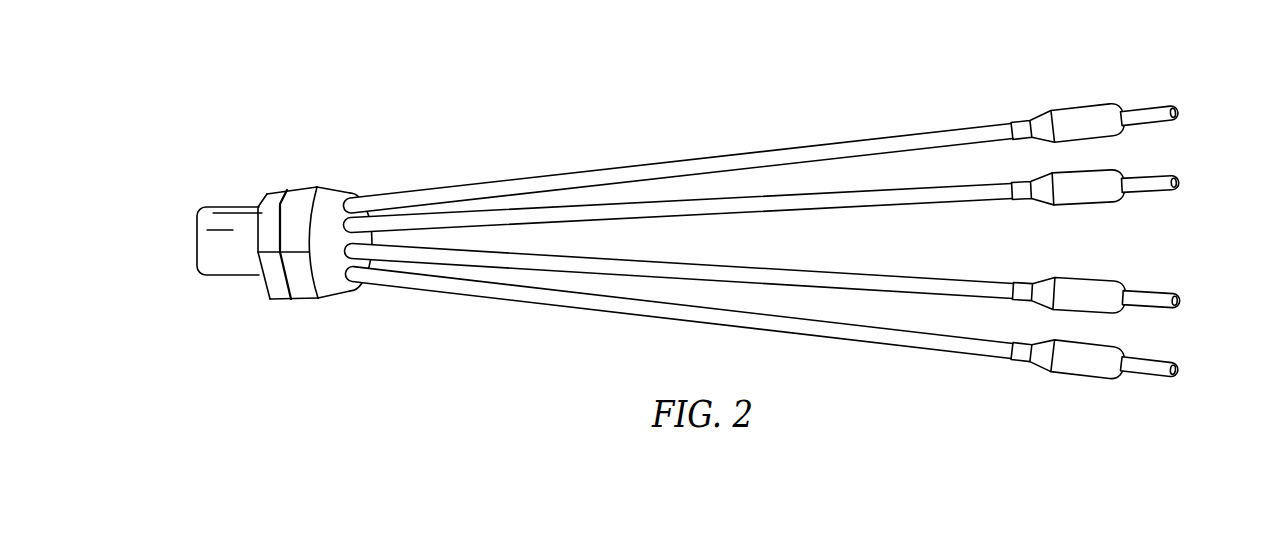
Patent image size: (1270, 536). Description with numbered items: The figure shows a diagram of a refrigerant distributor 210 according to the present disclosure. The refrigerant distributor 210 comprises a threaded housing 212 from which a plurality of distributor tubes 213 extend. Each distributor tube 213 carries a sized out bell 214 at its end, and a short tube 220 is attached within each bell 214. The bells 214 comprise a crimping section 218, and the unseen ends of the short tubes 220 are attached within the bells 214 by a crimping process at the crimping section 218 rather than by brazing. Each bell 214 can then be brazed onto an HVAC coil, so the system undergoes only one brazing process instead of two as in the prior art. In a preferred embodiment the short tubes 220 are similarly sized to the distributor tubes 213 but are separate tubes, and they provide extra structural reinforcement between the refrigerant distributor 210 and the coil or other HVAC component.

The refrigerant distributor 210 is at (246, 62).
The threaded housing 212 is at (283, 188).
The distributor tube 213 is at (714, 156).
The bell 214 is at (1105, 104).
The crimping section 218 is at (1015, 122).
The short tube 220 is at (1163, 122).